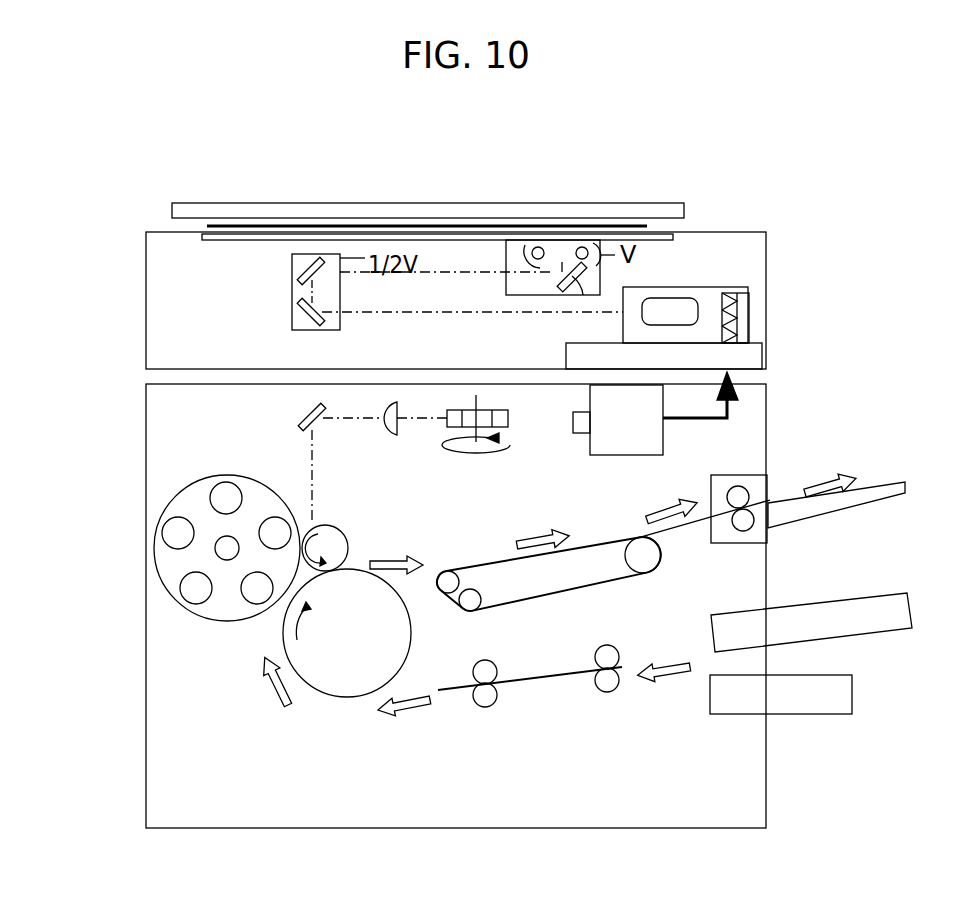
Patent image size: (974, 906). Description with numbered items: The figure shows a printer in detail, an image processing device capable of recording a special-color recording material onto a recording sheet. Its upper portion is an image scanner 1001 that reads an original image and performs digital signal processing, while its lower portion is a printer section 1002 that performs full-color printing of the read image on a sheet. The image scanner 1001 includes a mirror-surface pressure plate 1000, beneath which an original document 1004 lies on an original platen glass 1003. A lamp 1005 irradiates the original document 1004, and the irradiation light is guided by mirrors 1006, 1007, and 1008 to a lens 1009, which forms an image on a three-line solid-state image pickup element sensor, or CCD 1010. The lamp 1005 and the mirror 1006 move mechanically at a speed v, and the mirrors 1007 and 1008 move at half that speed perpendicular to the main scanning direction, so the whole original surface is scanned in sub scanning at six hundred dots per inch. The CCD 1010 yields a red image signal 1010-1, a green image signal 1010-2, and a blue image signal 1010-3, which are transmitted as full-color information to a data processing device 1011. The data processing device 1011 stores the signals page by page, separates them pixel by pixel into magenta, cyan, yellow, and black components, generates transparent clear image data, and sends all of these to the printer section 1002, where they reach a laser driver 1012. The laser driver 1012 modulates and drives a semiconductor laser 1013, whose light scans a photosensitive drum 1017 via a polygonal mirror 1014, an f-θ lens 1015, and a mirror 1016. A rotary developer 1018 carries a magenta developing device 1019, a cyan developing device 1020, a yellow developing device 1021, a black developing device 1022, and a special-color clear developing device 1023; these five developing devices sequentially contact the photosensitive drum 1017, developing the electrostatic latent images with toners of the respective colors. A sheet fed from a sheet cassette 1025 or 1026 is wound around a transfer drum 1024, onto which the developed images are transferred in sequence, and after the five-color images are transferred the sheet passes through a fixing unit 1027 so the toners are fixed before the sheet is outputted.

The mirror-surface pressure plate 1000 is at (412, 203).
The image scanner 1001 is at (146, 287).
The printer section 1002 is at (146, 422).
The original platen glass 1003 is at (660, 235).
The original document 1004 is at (612, 223).
The lamp 1005 is at (582, 247).
The mirror 1006 is at (582, 287).
The mirror 1007 is at (300, 266).
The mirror 1008 is at (300, 318).
The lens 1009 is at (667, 303).
The three-line solid-state image pickup element sensor (CCD) 1010 is at (806, 318).
The red (R) image signal 1010-1 is at (733, 302).
The green (G) image signal 1010-2 is at (733, 320).
The blue (B) image signal 1010-3 is at (733, 342).
The data processing device 1011 is at (740, 360).
The laser driver 1012 is at (657, 437).
The semiconductor laser 1013 is at (573, 425).
The polygonal mirror 1014 is at (508, 412).
The f-θ lens 1015 is at (392, 435).
The mirror 1016 is at (305, 409).
The photosensitive drum 1017 is at (335, 531).
The rotary developer 1018 is at (280, 455).
The magenta developing device 1019 is at (287, 520).
The cyan developing device 1020 is at (243, 597).
The yellow developing device 1021 is at (158, 577).
The black developing device 1022 is at (162, 507).
The special-color (clear) developing device 1023 is at (225, 475).
The transfer drum 1024 is at (338, 697).
The sheet cassette 1025 is at (818, 714).
The sheet cassette 1026 is at (887, 627).
The fixing unit 1027 is at (738, 543).